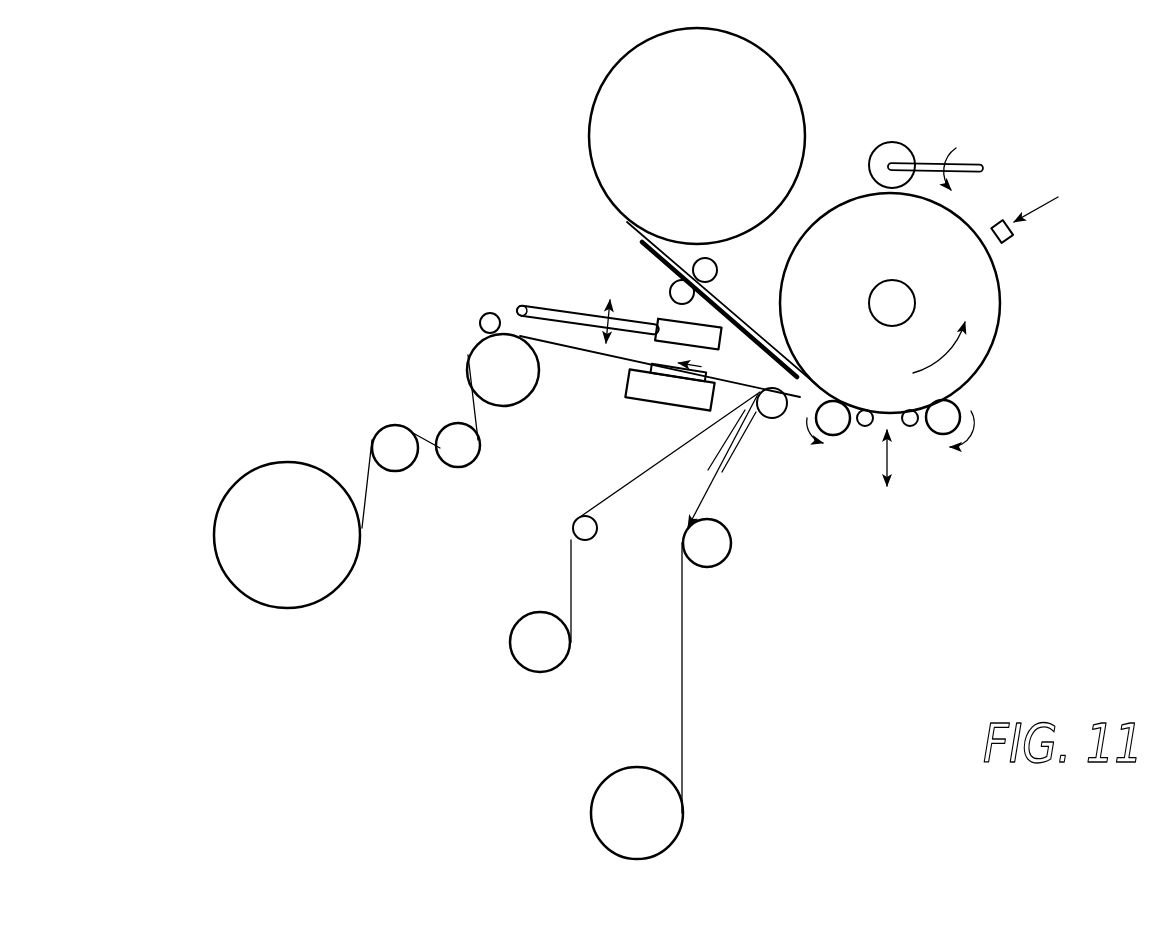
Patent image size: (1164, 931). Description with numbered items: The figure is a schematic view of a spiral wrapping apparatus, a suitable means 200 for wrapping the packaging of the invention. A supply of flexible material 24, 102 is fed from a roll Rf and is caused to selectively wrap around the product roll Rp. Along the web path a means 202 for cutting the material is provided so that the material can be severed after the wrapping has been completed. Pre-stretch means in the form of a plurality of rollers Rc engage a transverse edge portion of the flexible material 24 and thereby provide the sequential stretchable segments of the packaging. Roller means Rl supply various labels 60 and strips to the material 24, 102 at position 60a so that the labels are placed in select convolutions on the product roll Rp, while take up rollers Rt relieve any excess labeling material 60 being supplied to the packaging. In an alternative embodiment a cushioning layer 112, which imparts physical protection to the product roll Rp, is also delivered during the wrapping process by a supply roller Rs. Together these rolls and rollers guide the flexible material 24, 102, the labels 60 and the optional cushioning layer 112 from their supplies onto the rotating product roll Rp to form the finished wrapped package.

The pre-stretch rollers Rc is at (787, 71).
The product roll Rp is at (993, 328).
The supply roller Rs is at (392, 438).
The roll of flexible material Rf is at (237, 557).
The take up rollers Rt is at (522, 663).
The roller means for labels Rl is at (673, 823).
The means for wrapping 200 is at (1039, 139).
The means for cutting 202 is at (555, 293).
The cushioning layer 112 is at (734, 304).
The flexible material 24 is at (590, 517).
The flexible material 102 is at (367, 510).
The labels 60 is at (683, 640).
The label position 60a is at (745, 437).